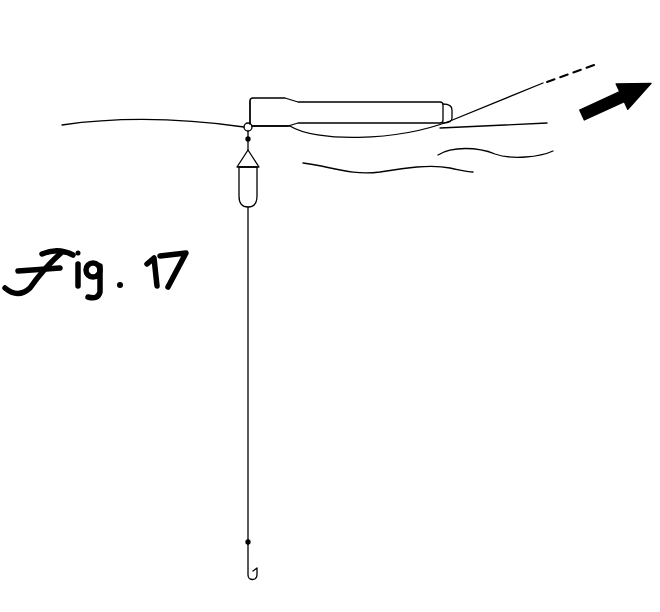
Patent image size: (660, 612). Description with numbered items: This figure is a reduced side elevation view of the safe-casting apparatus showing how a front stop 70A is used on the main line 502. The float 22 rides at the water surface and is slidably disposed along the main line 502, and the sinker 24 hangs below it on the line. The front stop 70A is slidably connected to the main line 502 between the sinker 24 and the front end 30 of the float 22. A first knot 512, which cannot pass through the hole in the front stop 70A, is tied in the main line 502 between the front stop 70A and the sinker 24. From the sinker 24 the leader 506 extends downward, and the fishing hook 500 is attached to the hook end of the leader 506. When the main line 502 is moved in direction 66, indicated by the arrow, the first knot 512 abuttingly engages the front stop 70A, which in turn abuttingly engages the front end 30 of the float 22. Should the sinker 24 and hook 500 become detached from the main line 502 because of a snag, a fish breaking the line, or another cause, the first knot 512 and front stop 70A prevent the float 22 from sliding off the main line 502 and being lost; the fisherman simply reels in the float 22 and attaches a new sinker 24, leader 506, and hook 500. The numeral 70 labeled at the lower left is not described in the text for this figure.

The float 22 is at (353, 101).
The front end of float 30 is at (250, 108).
The front stop 70A is at (242, 130).
The first knot 512 is at (245, 139).
The sinker 24 is at (259, 185).
The leader 506 is at (248, 372).
The fishing hook 500 is at (245, 550).
The main line 502 is at (540, 83).
The direction 66 is at (595, 118).
The fishing line portion 70 is at (0, 552).